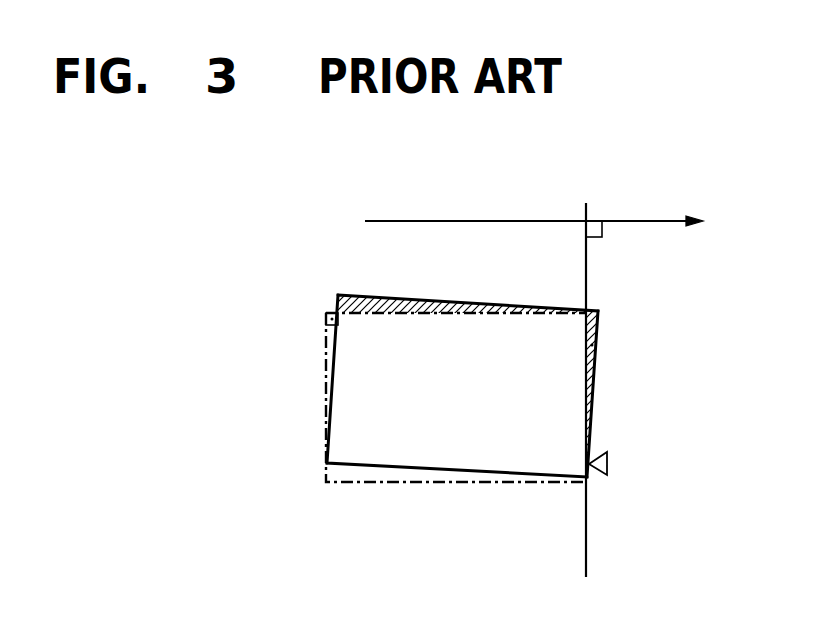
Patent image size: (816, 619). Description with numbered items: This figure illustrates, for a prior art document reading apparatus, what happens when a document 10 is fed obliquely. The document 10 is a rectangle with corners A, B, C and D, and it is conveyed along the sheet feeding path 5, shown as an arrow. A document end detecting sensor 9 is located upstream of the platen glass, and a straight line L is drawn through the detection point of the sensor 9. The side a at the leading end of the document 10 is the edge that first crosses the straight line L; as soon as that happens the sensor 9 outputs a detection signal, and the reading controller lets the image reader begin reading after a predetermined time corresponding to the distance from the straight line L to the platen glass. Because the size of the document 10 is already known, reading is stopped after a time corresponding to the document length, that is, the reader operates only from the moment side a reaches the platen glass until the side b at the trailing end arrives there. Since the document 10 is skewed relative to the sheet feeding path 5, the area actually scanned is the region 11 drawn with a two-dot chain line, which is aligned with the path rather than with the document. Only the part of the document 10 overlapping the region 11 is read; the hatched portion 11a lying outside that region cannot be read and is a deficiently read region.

The sheet feeding path 5 is at (630, 221).
The document end detecting sensor 9 is at (612, 461).
The document 10 is at (447, 455).
The region 11 is at (352, 483).
The hatched portion 11a is at (445, 298).
The straight line L is at (590, 556).
The corner A of rectangle ABCD A is at (598, 311).
The corner B of rectangle ABCD B is at (587, 480).
The corner C of rectangle ABCD C is at (327, 465).
The corner D of rectangle ABCD D is at (338, 293).
The side a at leading end a is at (598, 345).
The side b at trailing end b is at (326, 330).